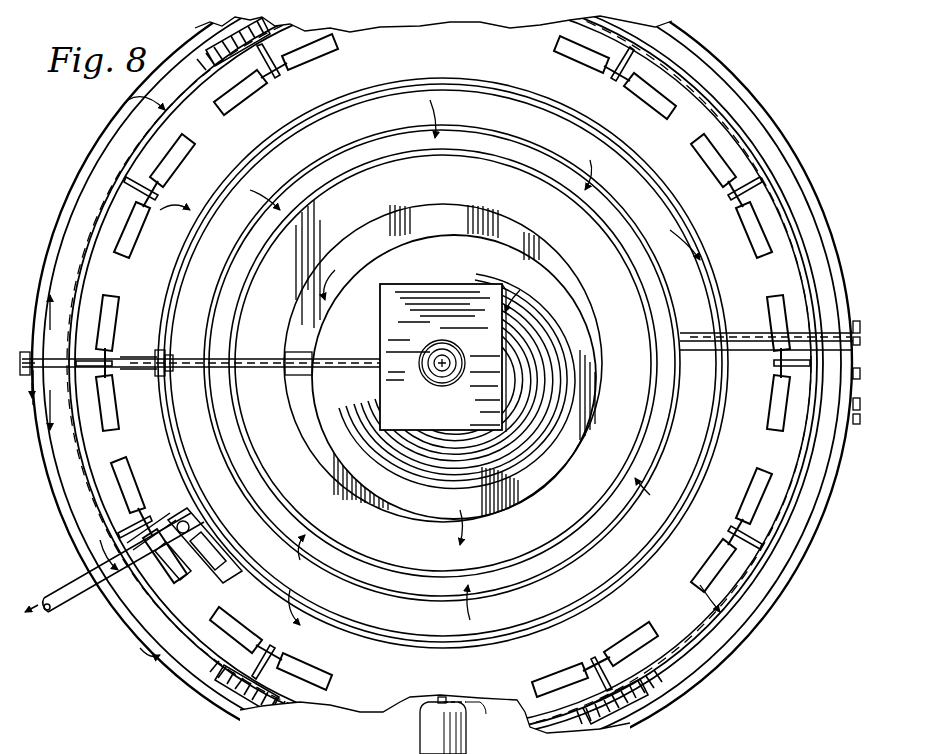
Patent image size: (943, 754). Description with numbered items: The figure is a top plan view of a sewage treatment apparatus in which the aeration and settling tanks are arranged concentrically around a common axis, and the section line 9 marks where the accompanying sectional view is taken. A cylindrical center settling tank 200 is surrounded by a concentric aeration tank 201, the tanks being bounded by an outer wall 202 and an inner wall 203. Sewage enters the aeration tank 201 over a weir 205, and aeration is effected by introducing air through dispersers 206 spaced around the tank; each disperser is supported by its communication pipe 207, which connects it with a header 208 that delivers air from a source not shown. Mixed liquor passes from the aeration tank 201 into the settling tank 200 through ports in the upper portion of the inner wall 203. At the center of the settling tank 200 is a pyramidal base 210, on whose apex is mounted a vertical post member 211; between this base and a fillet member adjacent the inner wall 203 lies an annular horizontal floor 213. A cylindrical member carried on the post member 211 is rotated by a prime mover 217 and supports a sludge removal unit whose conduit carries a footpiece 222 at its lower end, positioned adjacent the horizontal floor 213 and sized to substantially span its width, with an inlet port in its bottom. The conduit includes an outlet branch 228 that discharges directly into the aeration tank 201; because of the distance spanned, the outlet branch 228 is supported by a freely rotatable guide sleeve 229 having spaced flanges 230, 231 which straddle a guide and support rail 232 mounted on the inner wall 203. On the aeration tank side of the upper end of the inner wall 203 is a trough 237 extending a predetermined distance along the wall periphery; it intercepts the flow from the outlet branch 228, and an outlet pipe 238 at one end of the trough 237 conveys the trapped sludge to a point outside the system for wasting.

The center settling tank 200 is at (520, 482).
The aeration tank 201 is at (67, 230).
The outer wall 202 is at (760, 622).
The inner wall 203 is at (670, 557).
The weir 205 is at (173, 93).
The dispersers 206 is at (265, 80).
The communication pipe 207 is at (230, 45).
The header 208 is at (97, 547).
The pyramidal base 210 is at (462, 262).
The vertical post member 211 is at (442, 358).
The horizontal floor 213 is at (690, 296).
The prime mover 217 is at (470, 340).
The footpiece 222 is at (323, 367).
The outlet branch 228 is at (173, 407).
The guide sleeve 229 is at (147, 370).
The flange 230 is at (150, 352).
The flange 231 is at (172, 360).
The guide and support rail 232 is at (177, 460).
The trough 237 is at (222, 565).
The outlet pipe 238 is at (73, 603).
The section line 9 is at (29, 394).